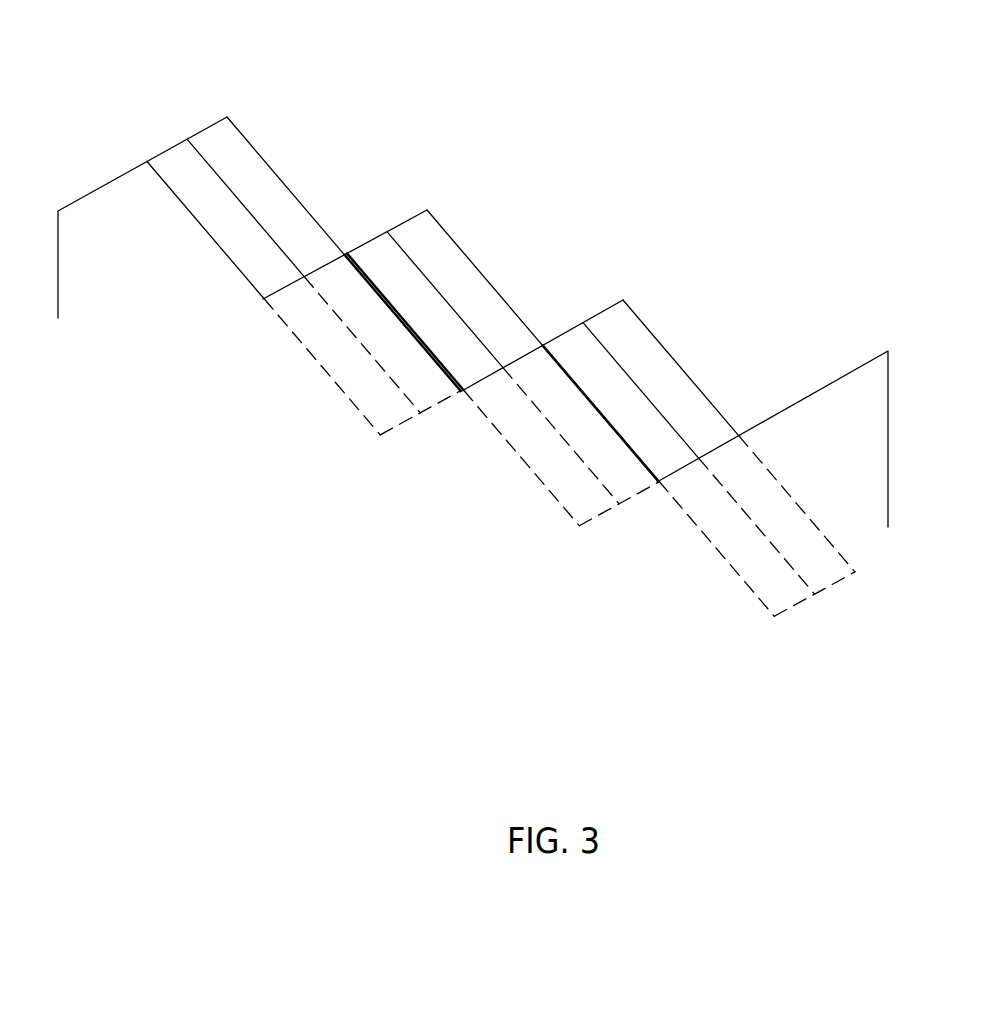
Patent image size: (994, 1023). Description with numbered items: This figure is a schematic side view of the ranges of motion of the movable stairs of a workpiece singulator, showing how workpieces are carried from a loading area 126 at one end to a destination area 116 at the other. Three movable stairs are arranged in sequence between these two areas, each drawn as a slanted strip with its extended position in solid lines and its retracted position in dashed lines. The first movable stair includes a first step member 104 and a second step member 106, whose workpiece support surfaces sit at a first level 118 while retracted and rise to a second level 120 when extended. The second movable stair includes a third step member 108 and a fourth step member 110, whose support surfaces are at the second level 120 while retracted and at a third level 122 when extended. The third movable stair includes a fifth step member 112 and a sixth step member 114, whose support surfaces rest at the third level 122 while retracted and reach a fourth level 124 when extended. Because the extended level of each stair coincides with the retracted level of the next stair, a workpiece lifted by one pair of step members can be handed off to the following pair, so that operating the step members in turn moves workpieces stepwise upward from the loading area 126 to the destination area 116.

The first step member 104 is at (682, 390).
The second step member 106 is at (567, 350).
The third step member 108 is at (412, 247).
The fourth step member 110 is at (368, 253).
The fifth step member 112 is at (212, 137).
The sixth step member 114 is at (163, 163).
The destination area 116 is at (110, 182).
The first level 118 is at (576, 526).
The second level 120 is at (378, 434).
The third level 122 is at (433, 204).
The fourth level 124 is at (234, 108).
The loading area 126 is at (843, 373).